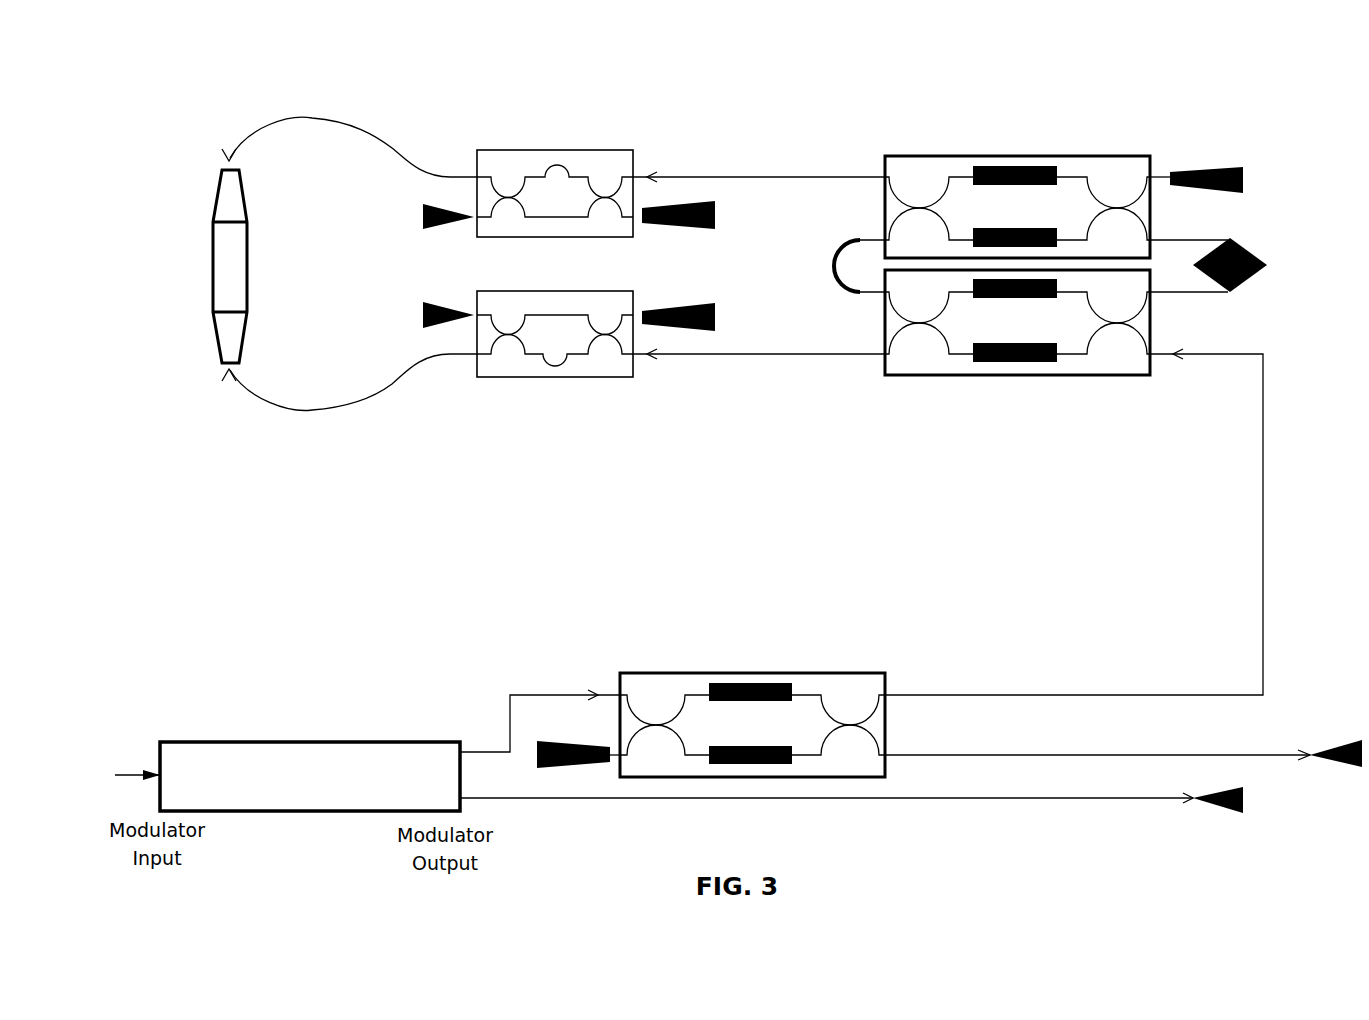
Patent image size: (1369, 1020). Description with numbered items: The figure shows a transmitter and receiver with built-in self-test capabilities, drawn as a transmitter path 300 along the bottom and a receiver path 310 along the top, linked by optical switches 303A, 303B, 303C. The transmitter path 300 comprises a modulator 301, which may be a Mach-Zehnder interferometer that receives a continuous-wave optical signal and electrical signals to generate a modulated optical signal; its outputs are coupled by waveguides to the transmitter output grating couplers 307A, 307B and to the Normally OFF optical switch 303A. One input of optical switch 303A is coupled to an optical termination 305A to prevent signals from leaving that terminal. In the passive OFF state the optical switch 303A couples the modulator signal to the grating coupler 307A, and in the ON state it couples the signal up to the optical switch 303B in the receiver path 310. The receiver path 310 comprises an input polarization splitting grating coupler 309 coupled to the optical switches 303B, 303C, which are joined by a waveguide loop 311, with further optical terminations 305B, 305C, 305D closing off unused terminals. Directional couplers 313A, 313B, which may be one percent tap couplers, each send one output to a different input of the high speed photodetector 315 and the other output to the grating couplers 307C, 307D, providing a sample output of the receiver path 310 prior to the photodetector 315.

The transmitter path 300 is at (275, 615).
The modulator 301 is at (280, 788).
The optical switch 303A is at (665, 673).
The optical switch 303B is at (940, 375).
The optical switch 303C is at (932, 156).
The optical termination 305A is at (563, 768).
The optical termination 305B is at (1229, 167).
The optical termination 305C is at (712, 229).
The optical termination 305D is at (716, 318).
The transmitter output grating coupler 307A is at (1220, 813).
The transmitter output grating coupler 307B is at (1340, 767).
The grating coupler 307C is at (423, 215).
The grating coupler 307D is at (423, 313).
The polarization splitting grating coupler 309 is at (1259, 251).
The receiver path 310 is at (248, 96).
The waveguide loop 311 is at (857, 238).
The directional coupler 313A is at (582, 150).
The directional coupler 313B is at (572, 377).
The high speed photodetector 315 is at (247, 274).